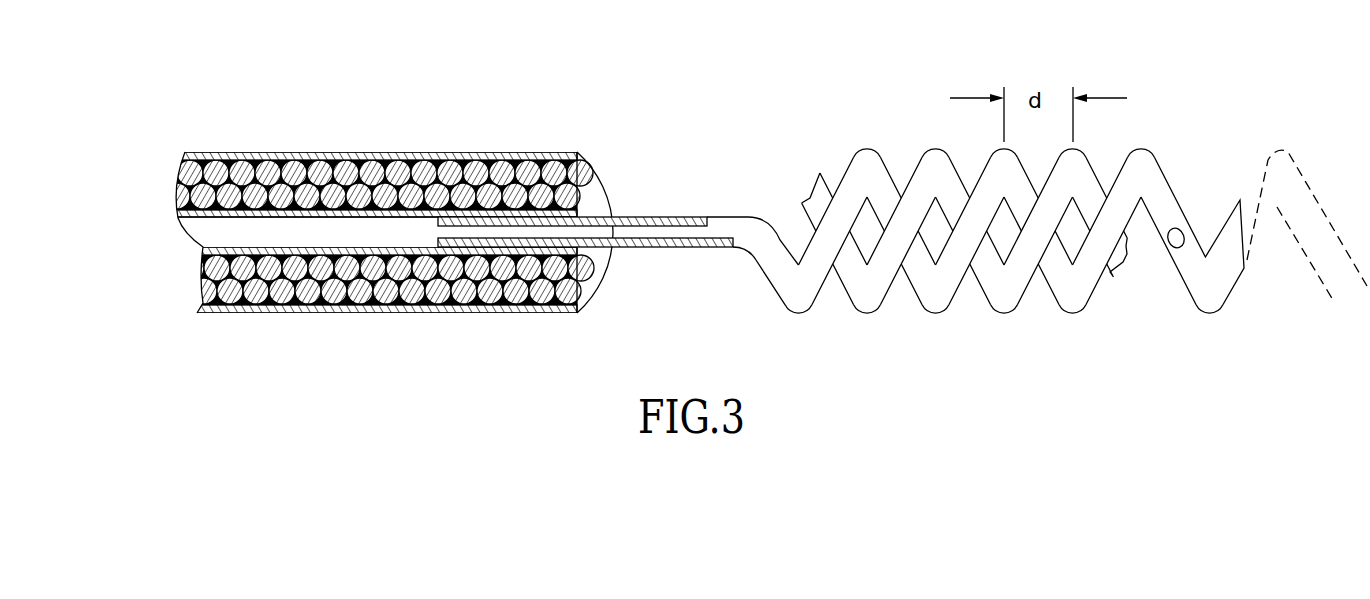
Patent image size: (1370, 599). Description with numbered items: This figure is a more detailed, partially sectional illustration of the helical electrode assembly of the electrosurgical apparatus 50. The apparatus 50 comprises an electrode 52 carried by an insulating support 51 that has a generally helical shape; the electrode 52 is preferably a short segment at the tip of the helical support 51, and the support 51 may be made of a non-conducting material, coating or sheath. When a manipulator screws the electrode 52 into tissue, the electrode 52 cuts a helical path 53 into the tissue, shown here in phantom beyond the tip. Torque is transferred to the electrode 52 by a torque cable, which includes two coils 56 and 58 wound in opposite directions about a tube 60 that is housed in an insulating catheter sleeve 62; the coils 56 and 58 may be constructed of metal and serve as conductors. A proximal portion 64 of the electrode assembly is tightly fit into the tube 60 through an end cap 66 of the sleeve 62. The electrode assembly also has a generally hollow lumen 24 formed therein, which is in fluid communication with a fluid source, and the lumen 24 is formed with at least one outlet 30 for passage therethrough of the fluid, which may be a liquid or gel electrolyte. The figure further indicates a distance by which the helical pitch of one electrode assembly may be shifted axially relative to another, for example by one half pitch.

The lumen 24 is at (682, 235).
The outlet 30 is at (1168, 243).
The electrosurgical apparatus 50 is at (1039, 199).
The insulating support 51 is at (883, 157).
The electrode 52 is at (1230, 263).
The helical path 53 is at (1310, 193).
The coil 56 is at (212, 275).
The coil 58 is at (386, 268).
The tube 60 is at (326, 239).
The insulating catheter sleeve 62 is at (412, 152).
The proximal portion 64 is at (667, 210).
The end cap 66 is at (598, 200).